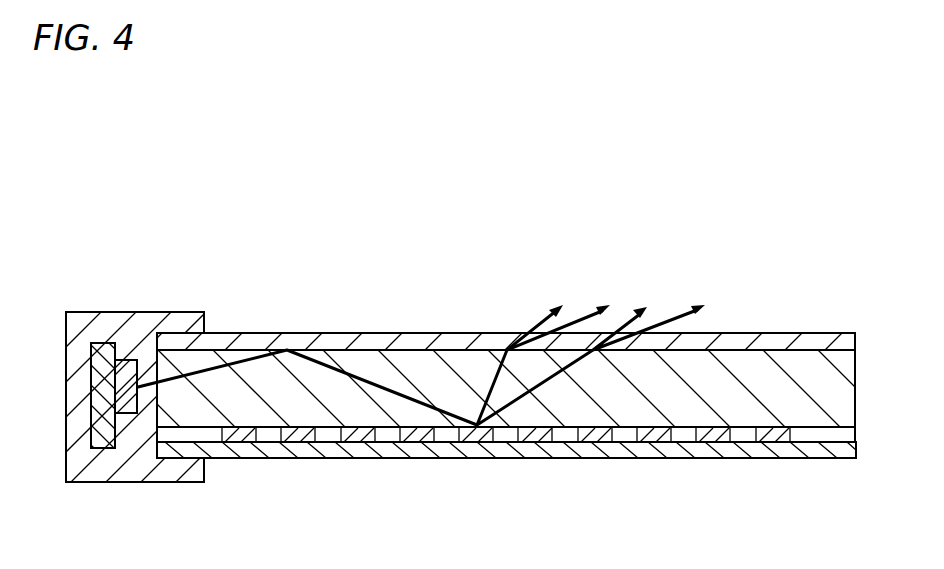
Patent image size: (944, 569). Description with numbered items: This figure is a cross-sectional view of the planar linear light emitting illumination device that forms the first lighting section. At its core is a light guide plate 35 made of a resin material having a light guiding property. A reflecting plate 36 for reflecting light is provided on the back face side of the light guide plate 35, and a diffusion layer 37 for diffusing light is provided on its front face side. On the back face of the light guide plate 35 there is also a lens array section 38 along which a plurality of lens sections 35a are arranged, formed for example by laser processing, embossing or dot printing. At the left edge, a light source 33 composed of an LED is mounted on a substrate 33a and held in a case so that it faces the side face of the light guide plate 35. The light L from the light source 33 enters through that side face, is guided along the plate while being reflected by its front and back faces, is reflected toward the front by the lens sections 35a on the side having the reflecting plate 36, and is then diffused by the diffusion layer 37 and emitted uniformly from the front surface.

The light source 33 is at (129, 372).
The substrate 33a is at (103, 442).
The light guide plate 35 is at (838, 408).
The lens sections 35a is at (523, 440).
The reflecting plate 36 is at (277, 452).
The diffusion layer 37 is at (813, 342).
The lens array section 38 is at (803, 457).
The light L is at (360, 377).